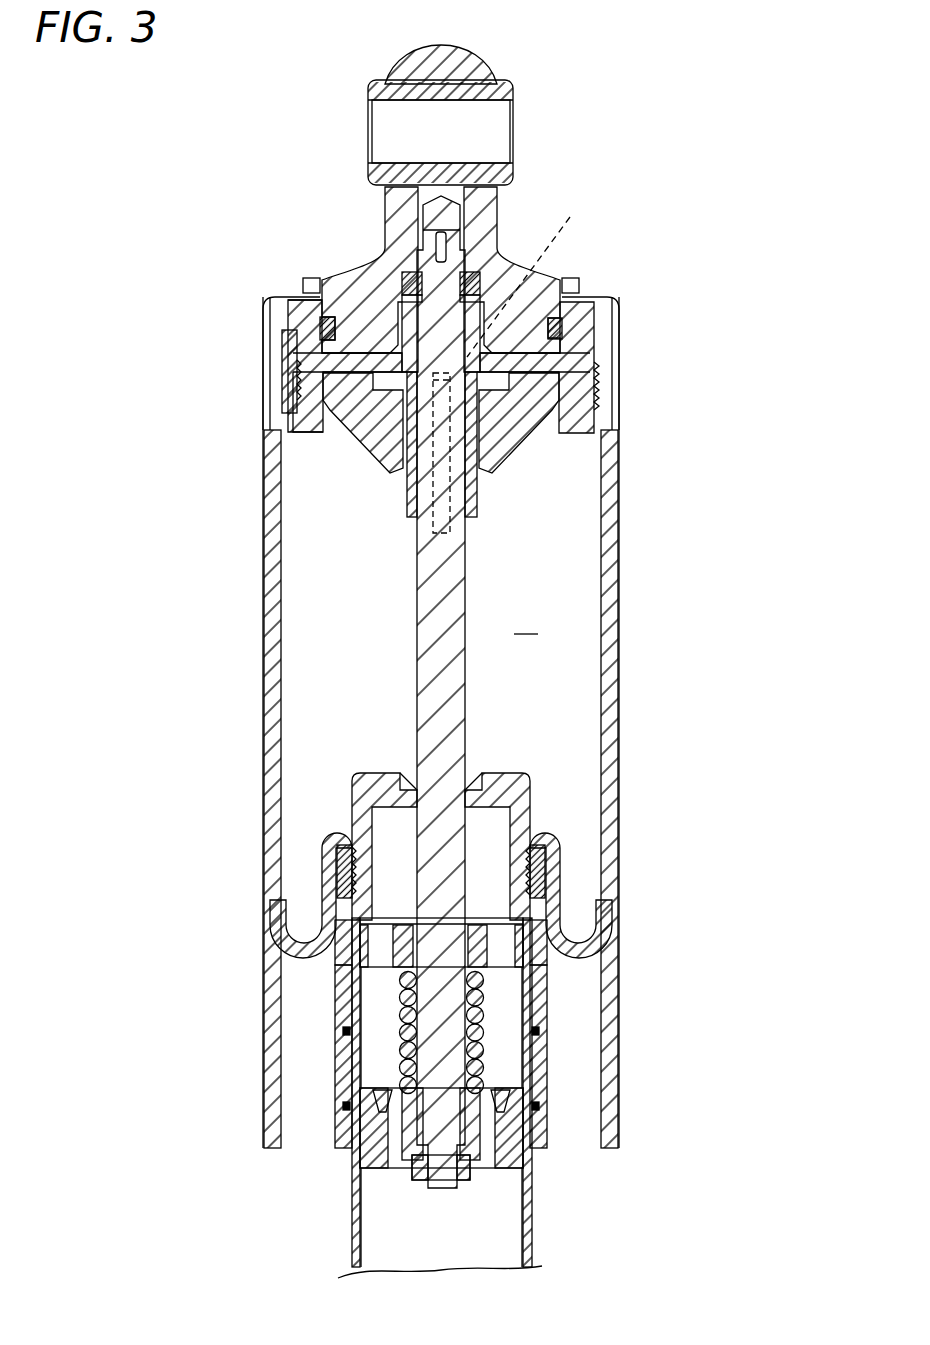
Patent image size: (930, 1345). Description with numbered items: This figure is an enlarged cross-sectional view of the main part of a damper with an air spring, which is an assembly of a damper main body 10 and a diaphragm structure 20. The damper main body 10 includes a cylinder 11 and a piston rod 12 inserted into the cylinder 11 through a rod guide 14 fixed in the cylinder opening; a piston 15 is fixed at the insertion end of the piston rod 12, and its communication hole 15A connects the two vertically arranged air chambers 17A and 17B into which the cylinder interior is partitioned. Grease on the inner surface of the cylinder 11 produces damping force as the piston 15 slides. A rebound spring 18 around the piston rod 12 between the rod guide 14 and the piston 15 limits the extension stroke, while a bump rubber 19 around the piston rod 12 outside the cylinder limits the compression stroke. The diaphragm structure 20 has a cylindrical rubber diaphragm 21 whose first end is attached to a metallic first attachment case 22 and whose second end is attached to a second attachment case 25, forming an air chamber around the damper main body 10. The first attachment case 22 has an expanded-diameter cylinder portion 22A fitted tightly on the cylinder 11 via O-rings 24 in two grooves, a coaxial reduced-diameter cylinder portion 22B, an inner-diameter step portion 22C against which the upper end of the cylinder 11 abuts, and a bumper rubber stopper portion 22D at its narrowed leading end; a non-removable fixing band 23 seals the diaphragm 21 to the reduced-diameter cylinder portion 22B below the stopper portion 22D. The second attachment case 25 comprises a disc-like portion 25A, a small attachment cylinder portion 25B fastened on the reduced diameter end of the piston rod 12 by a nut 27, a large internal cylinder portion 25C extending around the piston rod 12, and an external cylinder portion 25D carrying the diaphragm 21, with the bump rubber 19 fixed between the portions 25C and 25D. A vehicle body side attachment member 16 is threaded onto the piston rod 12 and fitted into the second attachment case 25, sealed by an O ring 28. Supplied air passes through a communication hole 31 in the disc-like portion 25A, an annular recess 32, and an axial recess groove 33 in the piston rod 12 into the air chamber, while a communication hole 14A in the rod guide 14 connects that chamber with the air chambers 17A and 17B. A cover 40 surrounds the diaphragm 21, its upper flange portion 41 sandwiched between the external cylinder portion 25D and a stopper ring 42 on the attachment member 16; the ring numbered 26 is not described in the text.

The damper main body 10 is at (350, 1205).
The cylinder 11 is at (352, 1235).
The piston rod 12 is at (415, 612).
The rod guide 14 is at (500, 930).
The communication hole 14A is at (520, 958).
The piston 15 is at (522, 1176).
The communication hole 15A is at (490, 1160).
The vehicle body side attachment member 16 is at (393, 220).
The air chamber 17A is at (500, 1058).
The air chamber 17B is at (490, 1246).
The rebound spring 18 is at (400, 1012).
The bump rubber 19 is at (368, 443).
The diaphragm structure 20 is at (263, 545).
The diaphragm 21 is at (292, 950).
The first attachment case 22 is at (519, 772).
The expanded-diameter cylinder portion 22A is at (343, 1060).
The reduced-diameter cylinder portion 22B is at (353, 812).
The inner-diameter step portion 22C is at (345, 936).
The bumper rubber stopper portion 22D is at (403, 772).
The non-removable fixing band 23 is at (336, 858).
The O-rings 24 is at (343, 1031).
The second attachment case 25 is at (585, 320).
The disc-like portion 25A is at (350, 347).
The attachment cylinder portion 25B is at (392, 262).
The internal cylinder portion 25C is at (408, 500).
The external cylinder portion 25D is at (323, 418).
The ring 26 is at (283, 387).
The nut 27 is at (505, 292).
The O ring 28 is at (320, 326).
The communication hole 31 is at (527, 272).
The annular recess 32 is at (283, 366).
The recess groove 33 is at (447, 520).
The cover 40 is at (263, 656).
The upper flange portion 41 is at (280, 299).
The stopper ring 42 is at (305, 286).